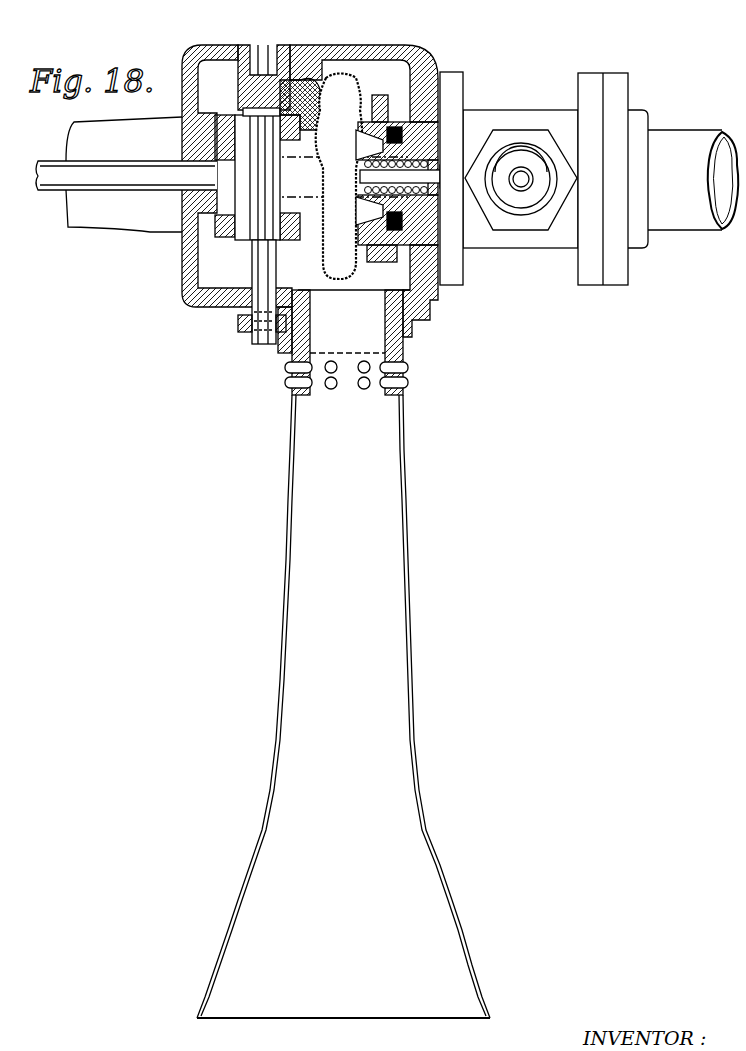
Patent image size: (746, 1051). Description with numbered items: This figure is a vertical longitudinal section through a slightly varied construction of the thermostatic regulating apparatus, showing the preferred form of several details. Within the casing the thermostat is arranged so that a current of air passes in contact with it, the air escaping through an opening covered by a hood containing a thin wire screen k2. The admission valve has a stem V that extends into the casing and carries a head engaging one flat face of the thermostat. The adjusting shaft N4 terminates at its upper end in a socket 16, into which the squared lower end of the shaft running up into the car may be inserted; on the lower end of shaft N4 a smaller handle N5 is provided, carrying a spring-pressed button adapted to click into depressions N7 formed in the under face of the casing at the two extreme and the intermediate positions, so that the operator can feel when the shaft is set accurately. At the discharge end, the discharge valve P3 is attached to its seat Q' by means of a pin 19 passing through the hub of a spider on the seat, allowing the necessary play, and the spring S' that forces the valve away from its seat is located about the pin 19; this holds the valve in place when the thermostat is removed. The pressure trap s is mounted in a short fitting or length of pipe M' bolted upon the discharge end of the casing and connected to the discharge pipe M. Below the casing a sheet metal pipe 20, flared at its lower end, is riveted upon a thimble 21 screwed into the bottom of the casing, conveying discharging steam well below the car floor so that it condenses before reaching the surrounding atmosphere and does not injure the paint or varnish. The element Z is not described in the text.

The socket 16 is at (253, 56).
The thin wire screen k2 is at (305, 83).
The adjusting shaft N4 is at (262, 108).
The discharge valve P3 is at (395, 130).
The valve seat Q' is at (429, 169).
The pin 19 is at (453, 170).
The discharge pipe M is at (658, 179).
The stem V is at (117, 180).
The shaft Z is at (248, 230).
The spring S' is at (379, 242).
The short fitting M' is at (544, 186).
The pressure trap s is at (527, 224).
The depressions N7 is at (212, 303).
The handle N5 is at (239, 338).
The thimble 21 is at (310, 343).
The sheet metal pipe 20 is at (292, 498).